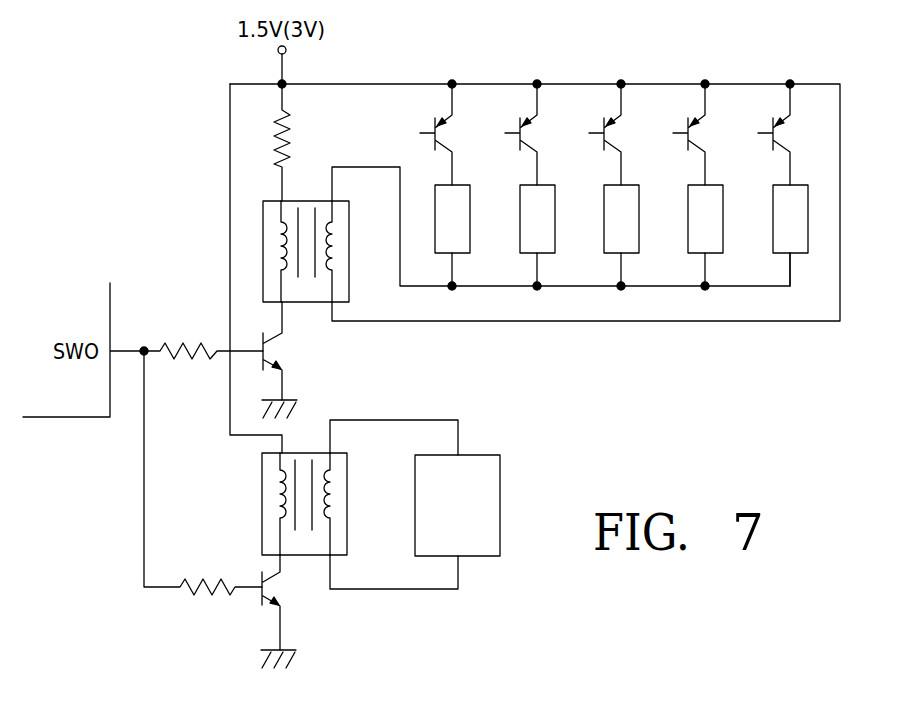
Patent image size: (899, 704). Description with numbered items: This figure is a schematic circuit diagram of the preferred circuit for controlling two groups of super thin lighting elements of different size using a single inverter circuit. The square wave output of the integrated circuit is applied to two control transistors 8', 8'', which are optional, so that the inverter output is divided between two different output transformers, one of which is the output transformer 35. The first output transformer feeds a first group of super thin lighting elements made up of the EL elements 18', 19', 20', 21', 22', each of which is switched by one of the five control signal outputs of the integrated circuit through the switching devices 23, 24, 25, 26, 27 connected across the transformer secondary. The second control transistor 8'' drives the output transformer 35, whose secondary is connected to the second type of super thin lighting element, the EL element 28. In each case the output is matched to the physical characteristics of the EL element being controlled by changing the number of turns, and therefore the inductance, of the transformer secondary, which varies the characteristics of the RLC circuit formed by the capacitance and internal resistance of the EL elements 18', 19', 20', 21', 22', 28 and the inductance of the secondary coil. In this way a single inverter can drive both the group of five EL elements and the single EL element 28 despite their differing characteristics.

The switching transistor EL1 23 is at (440, 117).
The transformer / switching transistor EL2 24 is at (268, 213).
The switching transistor EL3 25 is at (597, 122).
The switching transistor EL4 26 is at (677, 125).
The switching transistor EL5 27 is at (763, 127).
The EL element 18' is at (474, 275).
The EL element 19' is at (559, 275).
The EL element 20' is at (645, 275).
The EL element 21' is at (737, 279).
The EL element 22' is at (833, 235).
The control transistor 8' is at (239, 345).
The control transistor 8'' is at (235, 611).
The EL element 28 is at (485, 460).
The output transformer 35 is at (338, 542).